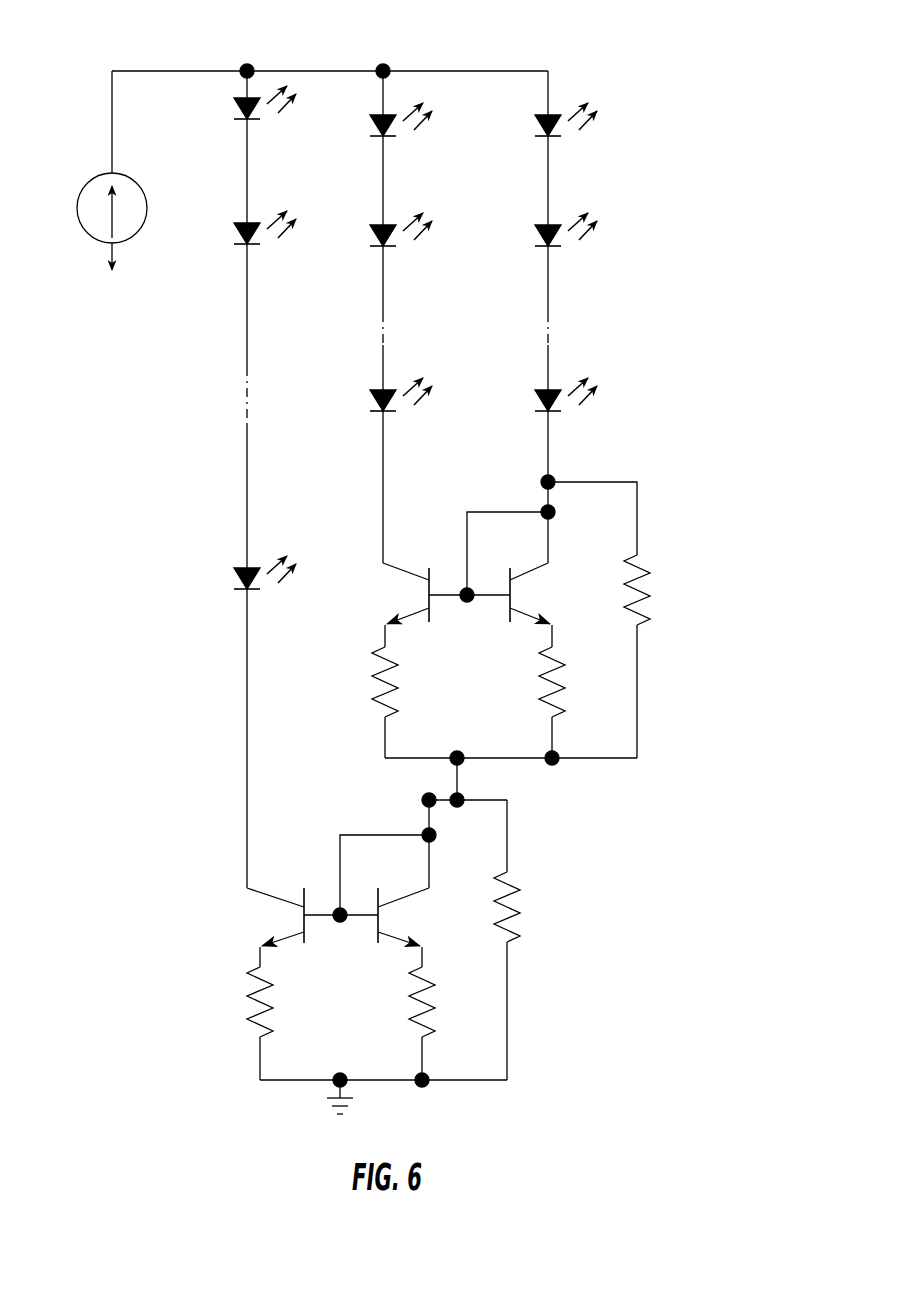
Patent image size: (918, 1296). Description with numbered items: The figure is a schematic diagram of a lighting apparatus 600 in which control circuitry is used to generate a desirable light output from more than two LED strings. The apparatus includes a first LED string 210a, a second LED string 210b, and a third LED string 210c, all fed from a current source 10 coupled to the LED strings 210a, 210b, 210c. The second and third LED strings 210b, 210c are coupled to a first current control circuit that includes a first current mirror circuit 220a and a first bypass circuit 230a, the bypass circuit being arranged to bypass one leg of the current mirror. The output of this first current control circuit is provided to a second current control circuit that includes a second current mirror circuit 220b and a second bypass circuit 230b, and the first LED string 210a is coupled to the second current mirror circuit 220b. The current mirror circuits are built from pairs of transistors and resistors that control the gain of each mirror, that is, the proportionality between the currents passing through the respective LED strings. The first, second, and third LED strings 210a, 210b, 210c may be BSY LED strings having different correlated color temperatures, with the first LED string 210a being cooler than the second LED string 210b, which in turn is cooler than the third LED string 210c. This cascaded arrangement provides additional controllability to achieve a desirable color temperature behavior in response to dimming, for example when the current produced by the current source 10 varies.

The lighting apparatus 600 is at (692, 108).
The current source 10 is at (133, 240).
The first LED string 210a is at (256, 200).
The second LED string 210b is at (418, 202).
The third LED string 210c is at (593, 202).
The first current mirror circuit 220a is at (337, 690).
The second current mirror circuit 220b is at (249, 1062).
The first bypass circuit 230a is at (723, 590).
The second bypass circuit 230b is at (591, 932).